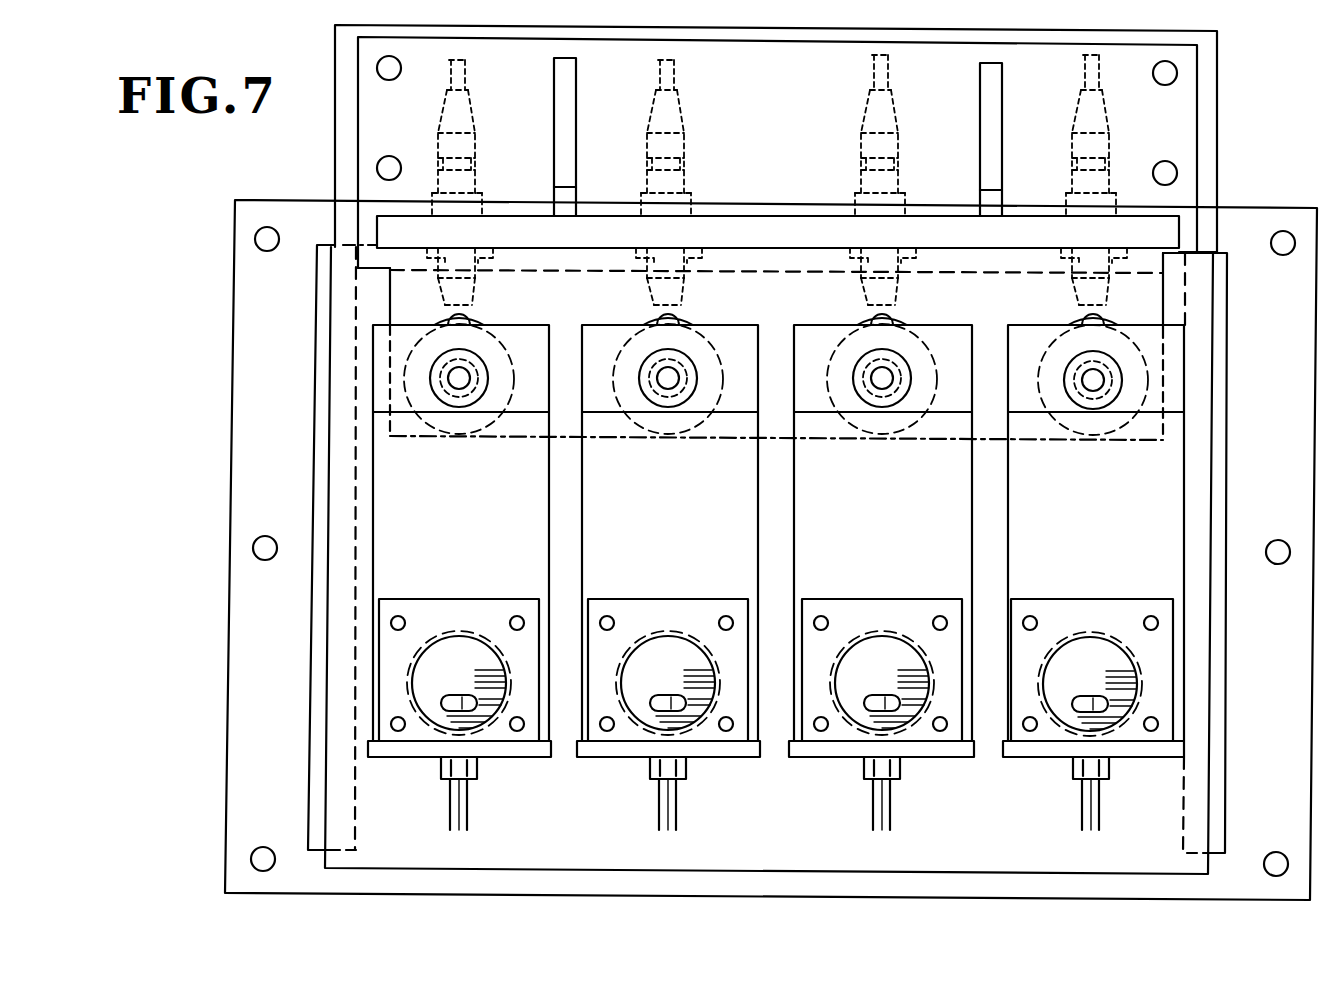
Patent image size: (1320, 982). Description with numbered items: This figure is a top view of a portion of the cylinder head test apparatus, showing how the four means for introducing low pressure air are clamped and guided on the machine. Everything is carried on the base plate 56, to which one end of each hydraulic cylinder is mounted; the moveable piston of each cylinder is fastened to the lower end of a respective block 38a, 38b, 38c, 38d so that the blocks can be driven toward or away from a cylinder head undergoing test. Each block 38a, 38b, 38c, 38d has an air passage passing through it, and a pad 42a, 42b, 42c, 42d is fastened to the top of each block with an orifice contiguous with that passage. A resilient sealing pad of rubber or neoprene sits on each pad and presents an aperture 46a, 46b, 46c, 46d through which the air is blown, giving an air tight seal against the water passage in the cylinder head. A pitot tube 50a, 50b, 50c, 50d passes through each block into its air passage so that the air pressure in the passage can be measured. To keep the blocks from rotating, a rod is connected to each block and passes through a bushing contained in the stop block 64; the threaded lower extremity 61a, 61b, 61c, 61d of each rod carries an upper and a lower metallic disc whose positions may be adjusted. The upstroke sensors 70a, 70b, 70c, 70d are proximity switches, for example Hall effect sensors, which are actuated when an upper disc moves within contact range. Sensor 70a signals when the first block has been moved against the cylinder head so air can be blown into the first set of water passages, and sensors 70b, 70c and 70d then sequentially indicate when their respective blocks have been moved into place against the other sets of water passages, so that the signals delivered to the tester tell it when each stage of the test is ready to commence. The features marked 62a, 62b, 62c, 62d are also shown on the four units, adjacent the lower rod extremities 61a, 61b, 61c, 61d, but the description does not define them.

The base plate 56 is at (1191, 828).
The stop block 64 is at (1143, 306).
The upstroke sensor 70a is at (1118, 190).
The upstroke sensor 70b is at (901, 190).
The upstroke sensor 70c is at (698, 192).
The upstroke sensor 70d is at (479, 192).
The block 38a is at (1146, 578).
The block 38b is at (901, 561).
The block 38c is at (681, 561).
The block 38d is at (475, 561).
The lower extremity of rod 61a is at (1087, 408).
The lower extremity of rod 61b is at (871, 404).
The lower extremity of rod 61c is at (665, 404).
The lower extremity of rod 61d is at (448, 404).
The inlet port 62a is at (1107, 427).
The inlet port 62b is at (894, 424).
The inlet port 62c is at (679, 423).
The inlet port 62d is at (467, 422).
The pad 42a is at (1092, 648).
The pad 42b is at (882, 648).
The pad 42c is at (668, 648).
The pad 42d is at (459, 647).
The aperture 46a is at (1090, 684).
The aperture 46b is at (882, 683).
The aperture 46c is at (668, 683).
The aperture 46d is at (459, 683).
The pitot tube 50a is at (1114, 794).
The pitot tube 50b is at (913, 793).
The pitot tube 50c is at (699, 793).
The pitot tube 50d is at (491, 793).